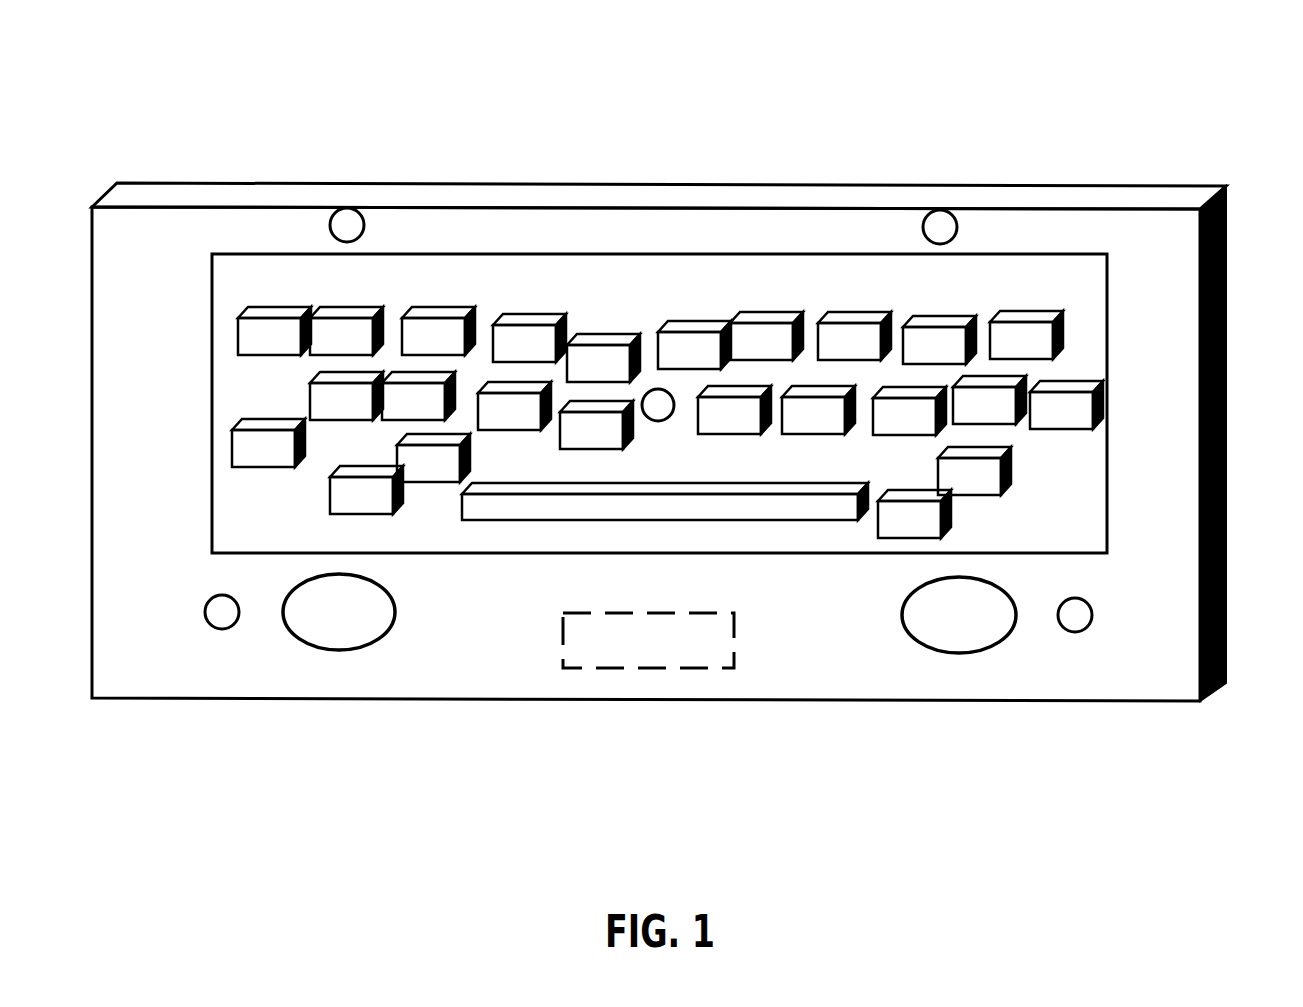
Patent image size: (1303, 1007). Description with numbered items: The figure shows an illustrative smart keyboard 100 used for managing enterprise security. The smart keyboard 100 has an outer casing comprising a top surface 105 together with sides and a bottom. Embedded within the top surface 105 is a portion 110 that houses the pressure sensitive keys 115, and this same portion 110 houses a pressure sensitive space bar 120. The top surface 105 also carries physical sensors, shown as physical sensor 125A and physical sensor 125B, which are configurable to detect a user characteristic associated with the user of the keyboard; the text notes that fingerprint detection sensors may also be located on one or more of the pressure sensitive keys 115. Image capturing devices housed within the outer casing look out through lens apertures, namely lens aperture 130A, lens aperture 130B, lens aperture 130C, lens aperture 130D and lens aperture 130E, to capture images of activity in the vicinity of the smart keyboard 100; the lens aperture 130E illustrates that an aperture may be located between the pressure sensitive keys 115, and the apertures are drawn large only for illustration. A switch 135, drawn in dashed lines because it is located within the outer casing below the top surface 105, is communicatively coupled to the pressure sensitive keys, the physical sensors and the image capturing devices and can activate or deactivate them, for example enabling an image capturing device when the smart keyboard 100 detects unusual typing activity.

The smart keyboard 100 is at (177, 162).
The top surface 105 is at (1158, 263).
The portion 110 is at (853, 570).
The pressure sensitive keys 115 is at (427, 285).
The pressure sensitive space bar 120 is at (747, 485).
The physical sensor 125A is at (957, 653).
The physical sensor 125B is at (340, 650).
The lens aperture 130A is at (1077, 632).
The lens aperture 130B is at (218, 628).
The lens aperture 130C is at (955, 217).
The lens aperture 130D is at (362, 207).
The lens aperture 130E is at (667, 383).
The switch 135 is at (650, 667).